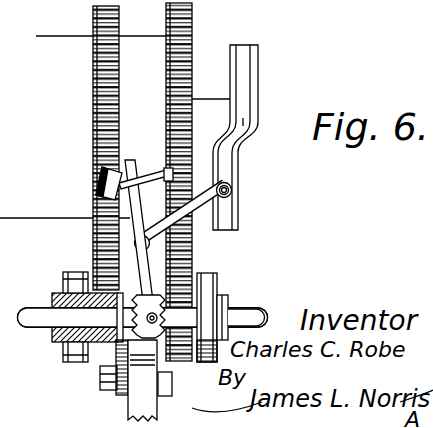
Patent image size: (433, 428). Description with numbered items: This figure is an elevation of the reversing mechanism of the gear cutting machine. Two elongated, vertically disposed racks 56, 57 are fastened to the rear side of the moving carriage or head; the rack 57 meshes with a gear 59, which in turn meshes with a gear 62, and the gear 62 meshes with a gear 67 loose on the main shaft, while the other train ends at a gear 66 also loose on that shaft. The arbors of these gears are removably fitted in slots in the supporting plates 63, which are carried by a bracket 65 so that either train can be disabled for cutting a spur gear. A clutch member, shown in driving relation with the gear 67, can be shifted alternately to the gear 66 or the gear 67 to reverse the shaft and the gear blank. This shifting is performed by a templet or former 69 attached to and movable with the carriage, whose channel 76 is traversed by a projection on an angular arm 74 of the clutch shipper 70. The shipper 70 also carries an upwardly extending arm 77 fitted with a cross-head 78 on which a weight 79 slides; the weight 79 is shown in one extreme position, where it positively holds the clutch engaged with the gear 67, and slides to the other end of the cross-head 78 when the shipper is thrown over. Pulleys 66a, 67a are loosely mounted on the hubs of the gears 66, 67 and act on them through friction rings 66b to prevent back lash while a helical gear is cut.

The rack 56 is at (100, 93).
The rack 57 is at (191, 39).
The gear 62 is at (30, 9).
The supporting plates 63 is at (115, 372).
The bracket 65 is at (144, 380).
The gear 66 is at (110, 343).
The pulley 66a is at (61, 281).
The friction ring 66b is at (62, 346).
The gear 67 is at (192, 277).
The pulley 67a is at (208, 293).
The templet 69 is at (254, 137).
The clutch shipper 70 is at (149, 189).
The angular arm 74 is at (195, 215).
The channel 76 is at (245, 123).
The upwardly extending arm 77 is at (137, 207).
The cross-head 78 is at (126, 181).
The weight 79 is at (101, 170).
The gear 59 is at (228, 187).